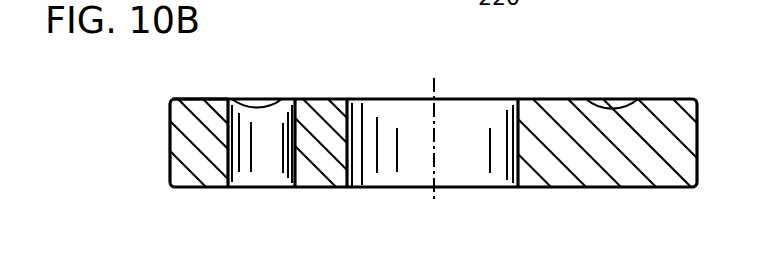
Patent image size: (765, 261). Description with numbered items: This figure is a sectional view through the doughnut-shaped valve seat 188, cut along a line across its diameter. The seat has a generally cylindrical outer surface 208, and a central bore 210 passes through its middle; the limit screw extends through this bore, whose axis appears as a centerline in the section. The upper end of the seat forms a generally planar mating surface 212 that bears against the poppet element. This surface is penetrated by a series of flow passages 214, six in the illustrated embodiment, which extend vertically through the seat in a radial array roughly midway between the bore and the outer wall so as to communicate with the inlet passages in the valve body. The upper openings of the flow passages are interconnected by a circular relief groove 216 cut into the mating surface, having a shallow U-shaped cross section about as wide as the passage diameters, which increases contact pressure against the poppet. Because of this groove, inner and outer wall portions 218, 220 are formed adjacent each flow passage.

The valve seat 188 is at (160, 117).
The outer surface 208 is at (170, 150).
The central bore 210 is at (388, 111).
The mating surface 212 is at (433, 126).
The flow passages 214 is at (267, 173).
The relief groove 216 is at (613, 104).
The inner wall portion 218 is at (313, 98).
The outer wall portion 220 is at (193, 98).